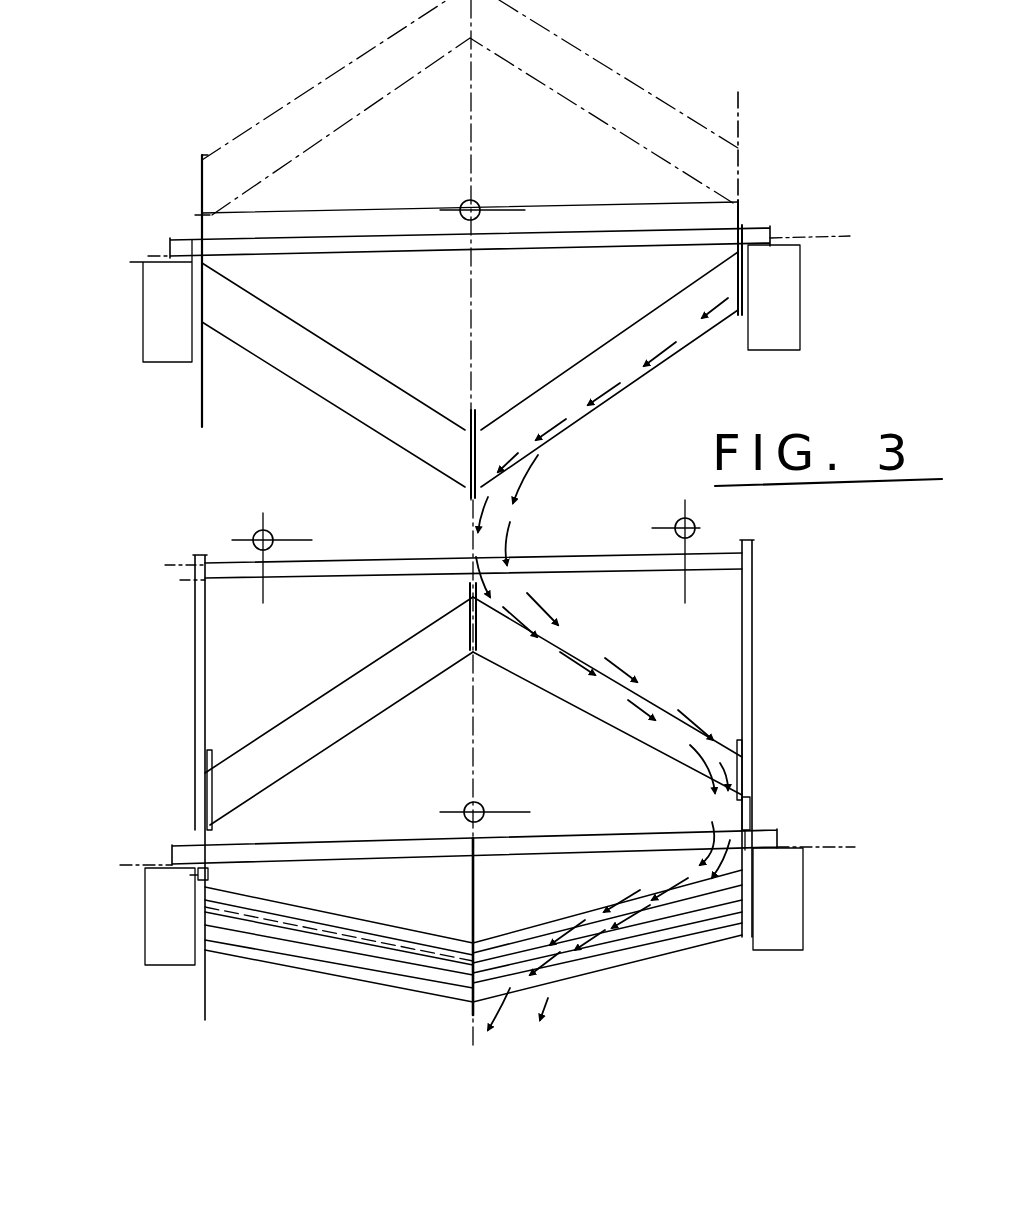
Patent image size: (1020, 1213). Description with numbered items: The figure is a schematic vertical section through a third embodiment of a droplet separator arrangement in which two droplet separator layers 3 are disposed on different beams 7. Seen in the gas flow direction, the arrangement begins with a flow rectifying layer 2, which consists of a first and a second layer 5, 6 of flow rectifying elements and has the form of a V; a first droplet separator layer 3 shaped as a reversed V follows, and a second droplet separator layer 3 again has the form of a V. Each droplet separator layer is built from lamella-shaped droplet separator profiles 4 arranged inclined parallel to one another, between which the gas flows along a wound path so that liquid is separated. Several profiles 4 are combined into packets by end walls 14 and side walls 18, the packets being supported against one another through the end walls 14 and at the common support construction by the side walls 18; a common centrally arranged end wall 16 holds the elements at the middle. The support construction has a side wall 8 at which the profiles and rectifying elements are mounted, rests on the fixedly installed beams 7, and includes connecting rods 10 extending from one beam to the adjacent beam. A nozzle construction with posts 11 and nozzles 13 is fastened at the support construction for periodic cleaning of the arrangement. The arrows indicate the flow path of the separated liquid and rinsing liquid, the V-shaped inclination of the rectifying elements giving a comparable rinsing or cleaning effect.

The flow rectifying layer 2 is at (345, 965).
The droplet separator layer 3 is at (350, 375).
The droplet separator profile 4 is at (401, 435).
The first layer of flow rectifying elements 5 is at (535, 940).
The second layer of flow rectifying elements 6 is at (595, 960).
The beam 7 is at (797, 272).
The side wall 8 is at (744, 828).
The connecting rod 10 is at (560, 245).
The post 11 is at (754, 636).
The nozzle 13 is at (480, 206).
The end wall 14 is at (468, 625).
The centrally arranged end wall 16 is at (470, 913).
The side wall 18 is at (205, 757).